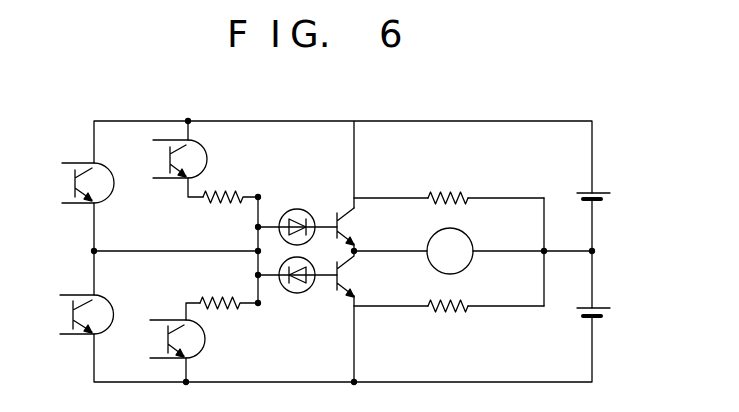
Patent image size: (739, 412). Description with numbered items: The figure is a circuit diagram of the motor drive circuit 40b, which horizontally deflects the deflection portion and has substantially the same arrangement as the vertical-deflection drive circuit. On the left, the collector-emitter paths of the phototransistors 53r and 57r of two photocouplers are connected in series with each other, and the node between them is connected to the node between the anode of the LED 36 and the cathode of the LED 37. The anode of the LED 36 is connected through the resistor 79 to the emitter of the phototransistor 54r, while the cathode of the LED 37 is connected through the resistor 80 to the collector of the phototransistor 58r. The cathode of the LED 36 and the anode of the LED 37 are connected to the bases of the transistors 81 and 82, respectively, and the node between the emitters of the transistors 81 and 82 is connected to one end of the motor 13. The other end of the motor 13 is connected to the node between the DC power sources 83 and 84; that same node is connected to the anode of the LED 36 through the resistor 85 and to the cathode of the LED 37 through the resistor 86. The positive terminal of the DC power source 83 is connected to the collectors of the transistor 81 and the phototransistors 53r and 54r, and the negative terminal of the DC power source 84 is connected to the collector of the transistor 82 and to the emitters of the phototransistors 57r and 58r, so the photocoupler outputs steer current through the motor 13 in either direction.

The motor drive circuit 40b is at (488, 119).
The phototransistor 53r is at (58, 176).
The phototransistor 54r is at (160, 163).
The phototransistor 57r is at (68, 326).
The phototransistor 58r is at (157, 337).
The resistor 79 is at (219, 197).
The resistor 80 is at (215, 300).
The LED 36 is at (296, 209).
The LED 37 is at (297, 293).
The transistor 81 is at (352, 228).
The transistor 82 is at (352, 283).
The resistor 85 is at (445, 191).
The resistor 86 is at (449, 314).
The motor 13 is at (463, 241).
The DC power source 83 is at (603, 190).
The DC power source 84 is at (606, 318).